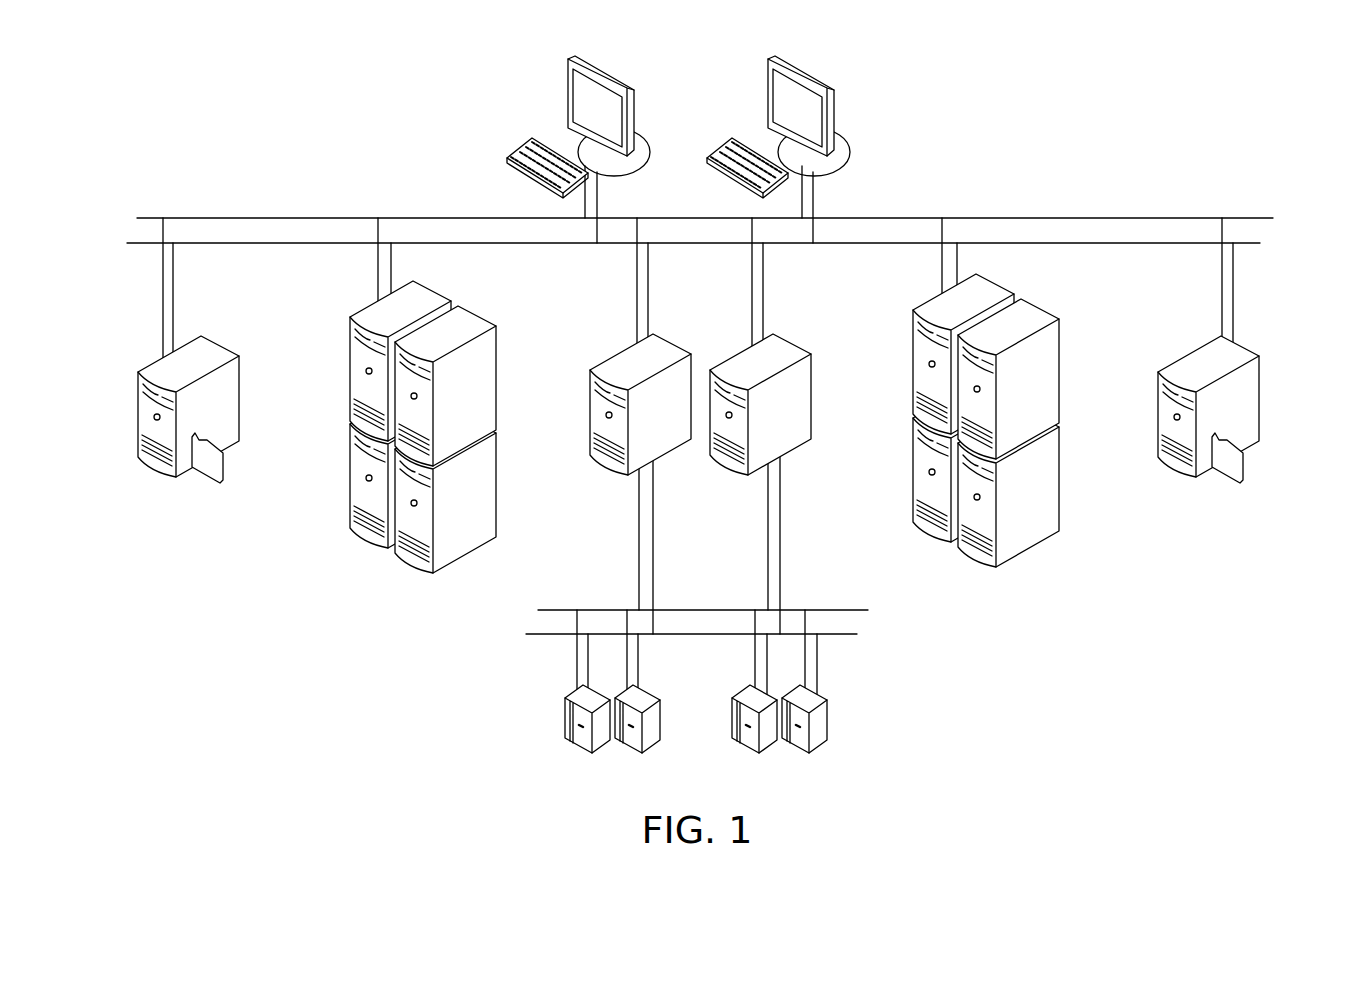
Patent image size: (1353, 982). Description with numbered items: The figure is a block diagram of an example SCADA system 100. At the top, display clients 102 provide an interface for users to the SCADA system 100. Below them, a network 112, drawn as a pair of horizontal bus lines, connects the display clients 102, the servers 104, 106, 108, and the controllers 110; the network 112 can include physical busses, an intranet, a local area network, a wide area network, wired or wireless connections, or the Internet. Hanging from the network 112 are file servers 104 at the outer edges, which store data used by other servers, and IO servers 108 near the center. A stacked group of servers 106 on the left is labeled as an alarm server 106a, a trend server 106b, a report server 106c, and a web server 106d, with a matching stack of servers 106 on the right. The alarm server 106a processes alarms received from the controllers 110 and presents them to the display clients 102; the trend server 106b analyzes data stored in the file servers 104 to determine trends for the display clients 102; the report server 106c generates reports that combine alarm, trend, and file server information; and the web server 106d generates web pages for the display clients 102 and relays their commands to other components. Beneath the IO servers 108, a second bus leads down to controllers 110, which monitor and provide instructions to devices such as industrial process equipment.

The SCADA system 100 is at (700, 409).
The display client 102 is at (602, 63).
The file server 104 is at (138, 392).
The server 106 is at (1067, 492).
The alarm server 106a is at (350, 493).
The trend server 106b is at (500, 498).
The report server 106c is at (490, 319).
The web server 106d is at (438, 289).
The IO server 108 is at (597, 462).
The controller 110 is at (563, 703).
The network 112 is at (1028, 219).